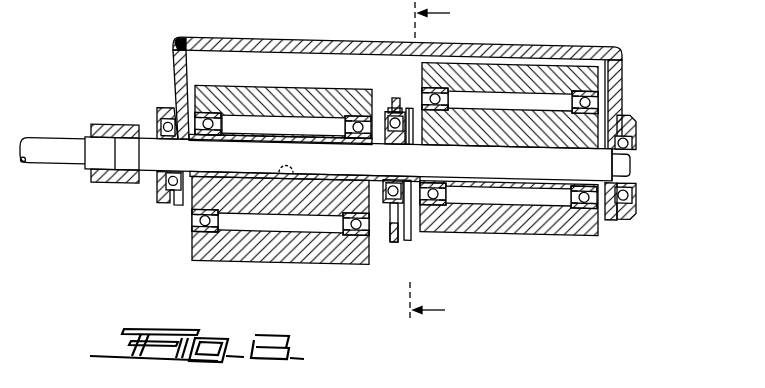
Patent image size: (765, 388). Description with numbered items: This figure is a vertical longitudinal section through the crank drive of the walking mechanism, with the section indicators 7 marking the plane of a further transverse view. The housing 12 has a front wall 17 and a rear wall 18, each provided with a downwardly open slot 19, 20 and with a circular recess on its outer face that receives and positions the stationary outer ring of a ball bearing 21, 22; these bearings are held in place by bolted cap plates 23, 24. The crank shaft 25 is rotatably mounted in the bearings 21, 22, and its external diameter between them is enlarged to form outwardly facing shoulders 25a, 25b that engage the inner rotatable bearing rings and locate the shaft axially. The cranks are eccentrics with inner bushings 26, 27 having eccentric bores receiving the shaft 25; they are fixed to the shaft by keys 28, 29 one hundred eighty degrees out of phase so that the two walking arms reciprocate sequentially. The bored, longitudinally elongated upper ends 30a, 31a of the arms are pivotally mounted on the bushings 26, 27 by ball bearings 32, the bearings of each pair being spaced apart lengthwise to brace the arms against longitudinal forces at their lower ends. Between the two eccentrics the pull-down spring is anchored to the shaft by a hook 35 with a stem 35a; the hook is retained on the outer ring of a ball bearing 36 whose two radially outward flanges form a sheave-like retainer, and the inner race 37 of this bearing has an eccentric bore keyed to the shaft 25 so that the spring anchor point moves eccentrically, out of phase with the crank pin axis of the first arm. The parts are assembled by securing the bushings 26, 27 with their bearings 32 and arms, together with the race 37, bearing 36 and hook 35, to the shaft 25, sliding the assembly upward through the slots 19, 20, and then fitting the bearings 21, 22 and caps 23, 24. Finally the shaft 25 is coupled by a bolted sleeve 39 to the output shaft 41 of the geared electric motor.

The section line 7- 7 is at (438, 162).
The housing 12 is at (563, 38).
The front wall 17 is at (173, 62).
The rear wall 18 is at (622, 82).
The slot 19 is at (178, 206).
The slot 20 is at (612, 212).
The ball bearing 21 is at (163, 108).
The ball bearing 22 is at (636, 122).
The cap plate 23 is at (157, 203).
The cap plate 24 is at (636, 196).
The crank shaft 25 is at (357, 159).
The shoulder 25a is at (186, 141).
The shoulder 25b is at (596, 164).
The bushing 26 is at (304, 132).
The bushing 27 is at (526, 102).
The key 28 is at (296, 169).
The key 29 is at (514, 139).
The enlarged upper end 30a is at (208, 261).
The enlarged upper end 31a is at (513, 202).
The ball bearings 32 is at (194, 230).
The hook 35 is at (393, 93).
The stem 35a is at (394, 237).
The ball bearing 36 is at (413, 120).
The inner race 37 is at (410, 230).
The sleeve 39 is at (99, 128).
The output shaft 41 is at (66, 168).